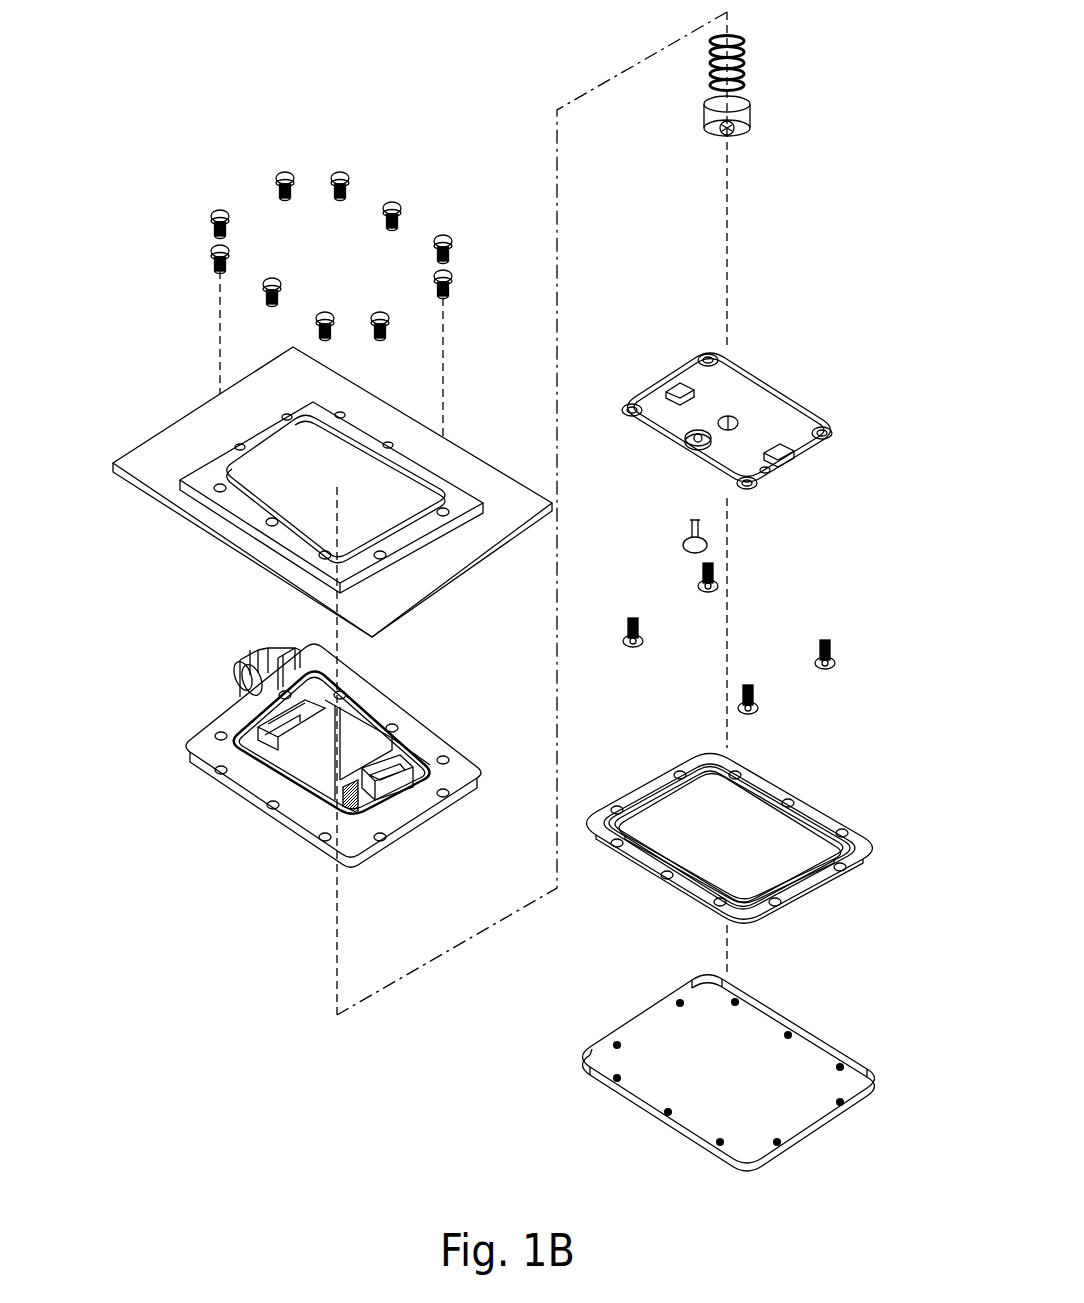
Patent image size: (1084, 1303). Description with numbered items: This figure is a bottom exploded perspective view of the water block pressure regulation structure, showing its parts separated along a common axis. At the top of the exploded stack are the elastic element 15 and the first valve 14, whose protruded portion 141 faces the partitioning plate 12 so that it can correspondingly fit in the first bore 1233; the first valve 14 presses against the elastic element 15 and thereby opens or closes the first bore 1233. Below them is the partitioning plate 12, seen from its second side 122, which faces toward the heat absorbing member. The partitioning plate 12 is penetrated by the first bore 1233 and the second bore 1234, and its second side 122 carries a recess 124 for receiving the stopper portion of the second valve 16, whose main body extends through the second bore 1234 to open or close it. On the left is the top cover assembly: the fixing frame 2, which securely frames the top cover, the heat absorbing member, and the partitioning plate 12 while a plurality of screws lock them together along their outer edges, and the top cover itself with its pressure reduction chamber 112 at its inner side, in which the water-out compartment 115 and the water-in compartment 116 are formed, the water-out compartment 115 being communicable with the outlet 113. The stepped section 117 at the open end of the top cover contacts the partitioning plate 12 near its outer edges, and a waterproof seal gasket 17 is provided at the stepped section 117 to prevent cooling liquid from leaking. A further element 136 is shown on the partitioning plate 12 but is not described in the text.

The fixing frame 2 is at (163, 440).
The partitioning plate 12 is at (793, 393).
The first valve 14 is at (752, 110).
The elastic element 15 is at (747, 52).
The second valve 16 is at (690, 533).
The waterproof seal gasket 17 is at (803, 798).
The pressure reduction chamber 112 is at (320, 778).
The outlet 113 is at (243, 662).
The water-out compartment 115 is at (285, 755).
The water-in compartment 116 is at (400, 797).
The stepped section 117 is at (458, 505).
The second side 122 is at (687, 427).
The recess 124 is at (692, 437).
The hole 136 is at (767, 472).
The protruded portion 141 is at (742, 133).
The first bore 1233 is at (783, 462).
The second bore 1234 is at (697, 447).